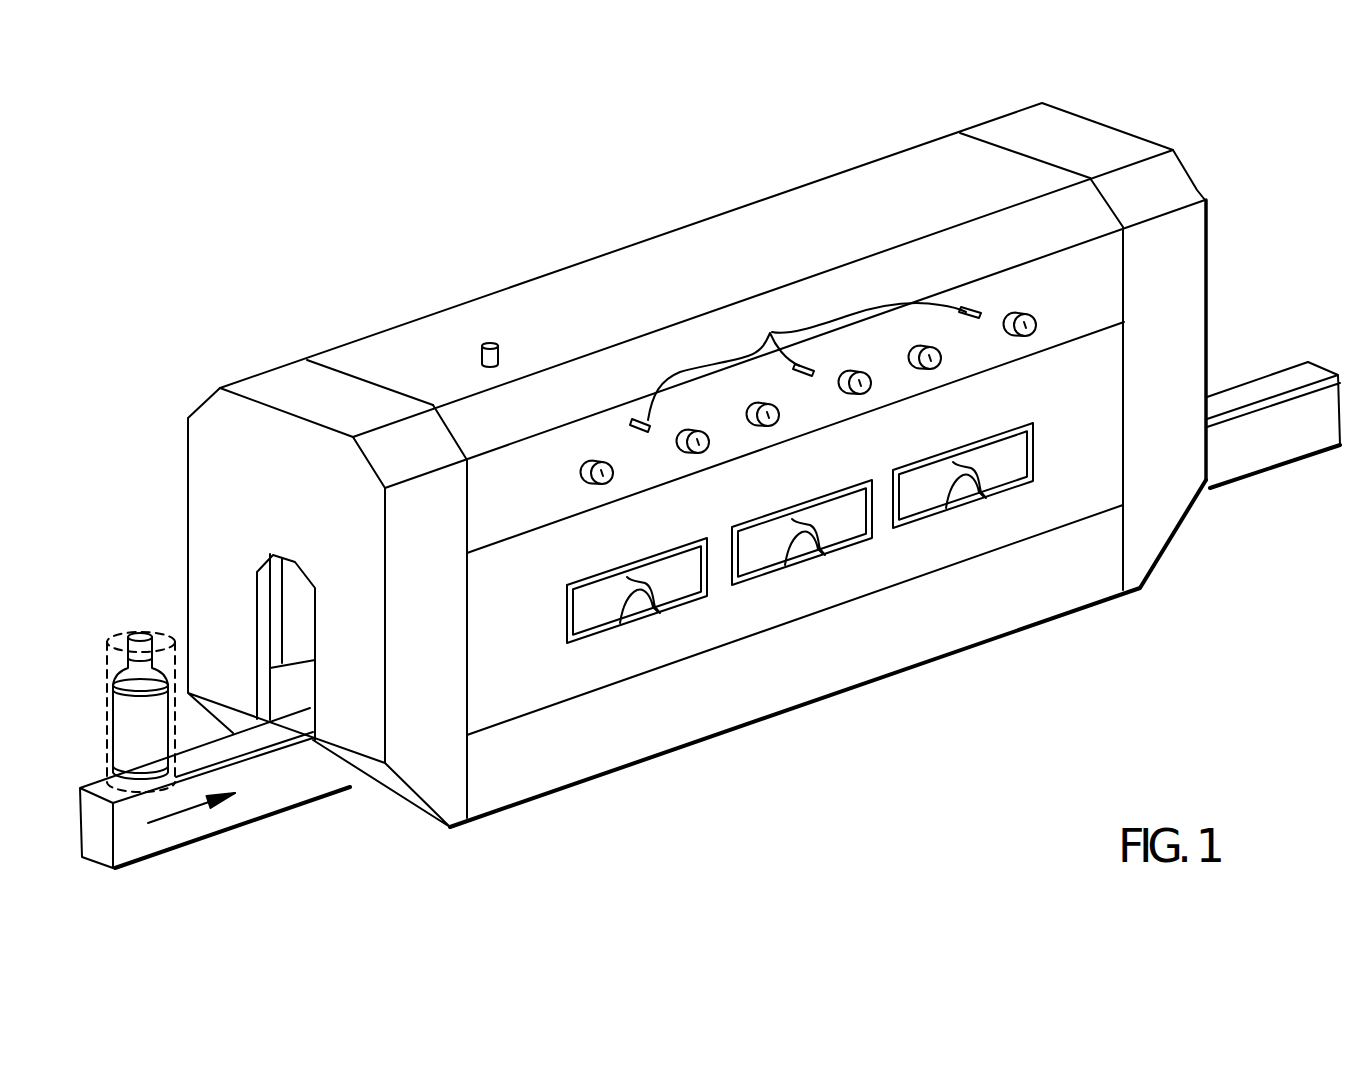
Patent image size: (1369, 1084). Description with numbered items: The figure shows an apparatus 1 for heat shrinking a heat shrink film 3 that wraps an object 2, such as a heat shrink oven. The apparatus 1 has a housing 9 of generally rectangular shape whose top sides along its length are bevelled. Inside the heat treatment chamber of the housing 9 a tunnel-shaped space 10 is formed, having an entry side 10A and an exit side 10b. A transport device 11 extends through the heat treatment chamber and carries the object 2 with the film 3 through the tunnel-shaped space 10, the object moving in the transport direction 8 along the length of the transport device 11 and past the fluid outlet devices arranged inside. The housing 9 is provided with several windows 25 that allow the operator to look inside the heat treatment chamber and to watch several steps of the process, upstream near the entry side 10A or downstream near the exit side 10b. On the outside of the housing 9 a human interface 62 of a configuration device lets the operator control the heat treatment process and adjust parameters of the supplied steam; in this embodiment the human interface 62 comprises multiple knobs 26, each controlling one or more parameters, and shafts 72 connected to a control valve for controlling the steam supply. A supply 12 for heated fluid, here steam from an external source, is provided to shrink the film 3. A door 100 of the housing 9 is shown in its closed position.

The apparatus 1 is at (325, 320).
The object 2 is at (140, 637).
The heat shrink film 3 is at (113, 660).
The transport direction 8 is at (180, 820).
The housing 9 is at (487, 307).
The tunnel-shaped space 10 is at (296, 690).
The entry side 10A is at (197, 458).
The exit side 10b is at (1223, 362).
The transport device 11 is at (100, 788).
The supply for heated fluid 12 is at (498, 355).
The windows 25 is at (682, 598).
The knobs 26 is at (605, 477).
The human interface 62 is at (1060, 300).
The shafts 72 is at (770, 327).
The door 100 is at (1067, 502).